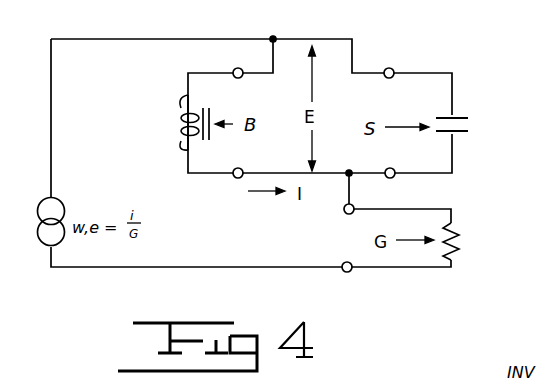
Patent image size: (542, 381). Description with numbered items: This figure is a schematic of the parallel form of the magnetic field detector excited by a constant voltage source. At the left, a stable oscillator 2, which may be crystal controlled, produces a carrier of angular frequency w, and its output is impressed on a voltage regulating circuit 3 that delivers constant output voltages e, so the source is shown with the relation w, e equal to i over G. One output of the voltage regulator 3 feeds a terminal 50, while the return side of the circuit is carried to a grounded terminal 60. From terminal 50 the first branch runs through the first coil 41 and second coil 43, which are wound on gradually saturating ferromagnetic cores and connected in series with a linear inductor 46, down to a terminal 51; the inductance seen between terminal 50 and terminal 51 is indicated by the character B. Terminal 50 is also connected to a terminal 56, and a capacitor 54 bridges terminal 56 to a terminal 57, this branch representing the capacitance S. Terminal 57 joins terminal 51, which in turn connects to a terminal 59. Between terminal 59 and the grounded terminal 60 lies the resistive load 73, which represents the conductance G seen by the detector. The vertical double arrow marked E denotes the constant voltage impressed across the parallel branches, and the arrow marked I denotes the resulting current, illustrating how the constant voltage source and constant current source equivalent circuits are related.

The stable oscillator 2 is at (71, 211).
The voltage regulating circuit 3 is at (64, 201).
The first coil 41 is at (143, 122).
The second coil 43 is at (143, 122).
The linear inductor 46 is at (178, 118).
The terminal 50 is at (237, 79).
The terminal 51 is at (234, 178).
The capacitor 54 is at (466, 133).
The terminal 56 is at (393, 69).
The terminal 57 is at (392, 179).
The terminal 59 is at (345, 214).
The terminal 60 is at (343, 272).
The resistive load 73 is at (458, 233).